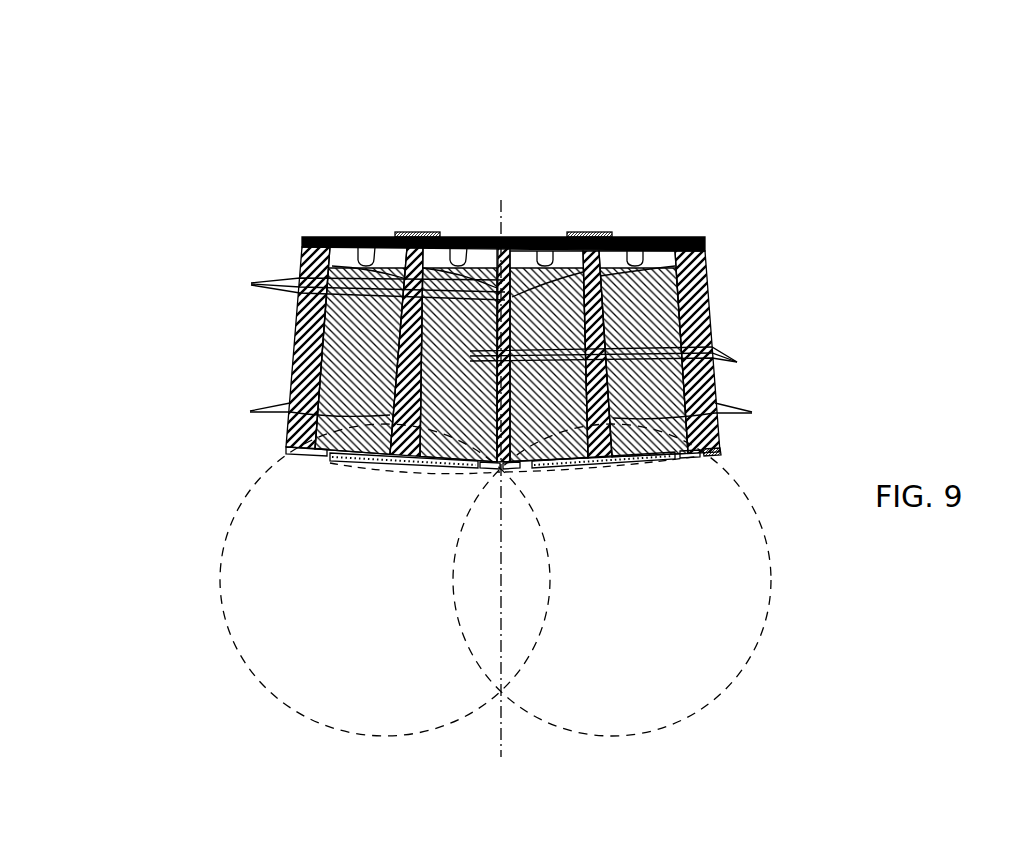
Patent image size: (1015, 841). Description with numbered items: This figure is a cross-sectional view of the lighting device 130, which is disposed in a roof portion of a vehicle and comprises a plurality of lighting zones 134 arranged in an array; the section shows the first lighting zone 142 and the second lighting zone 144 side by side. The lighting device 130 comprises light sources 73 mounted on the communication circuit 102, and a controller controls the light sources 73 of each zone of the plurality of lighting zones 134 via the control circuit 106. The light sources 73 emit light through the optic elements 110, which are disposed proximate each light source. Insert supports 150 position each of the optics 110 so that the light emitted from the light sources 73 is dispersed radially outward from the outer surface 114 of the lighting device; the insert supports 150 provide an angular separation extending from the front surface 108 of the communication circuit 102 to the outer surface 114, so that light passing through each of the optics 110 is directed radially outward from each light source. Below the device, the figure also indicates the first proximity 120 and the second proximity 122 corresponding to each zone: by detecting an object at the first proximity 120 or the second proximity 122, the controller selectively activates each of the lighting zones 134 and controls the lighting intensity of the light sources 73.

The lighting device 130 is at (590, 73).
The first lighting zone 142 is at (388, 150).
The second lighting zone 144 is at (630, 148).
The plurality of lighting zones 134 is at (528, 218).
The control circuit 106 is at (412, 232).
The communication circuit 102 is at (645, 237).
The front surface 108 is at (663, 249).
The light sources 73 is at (365, 287).
The optic elements 110 is at (623, 362).
The insert supports 150 is at (500, 415).
The second proximity 122 is at (380, 470).
The outer surface 114 is at (703, 457).
The first proximity 120 is at (269, 691).